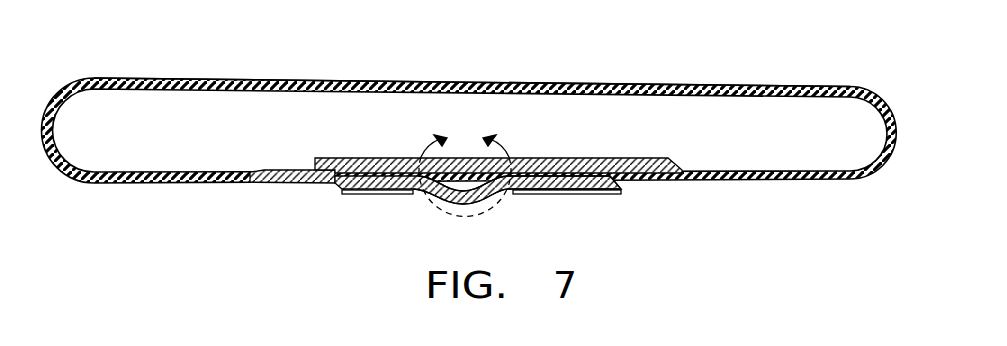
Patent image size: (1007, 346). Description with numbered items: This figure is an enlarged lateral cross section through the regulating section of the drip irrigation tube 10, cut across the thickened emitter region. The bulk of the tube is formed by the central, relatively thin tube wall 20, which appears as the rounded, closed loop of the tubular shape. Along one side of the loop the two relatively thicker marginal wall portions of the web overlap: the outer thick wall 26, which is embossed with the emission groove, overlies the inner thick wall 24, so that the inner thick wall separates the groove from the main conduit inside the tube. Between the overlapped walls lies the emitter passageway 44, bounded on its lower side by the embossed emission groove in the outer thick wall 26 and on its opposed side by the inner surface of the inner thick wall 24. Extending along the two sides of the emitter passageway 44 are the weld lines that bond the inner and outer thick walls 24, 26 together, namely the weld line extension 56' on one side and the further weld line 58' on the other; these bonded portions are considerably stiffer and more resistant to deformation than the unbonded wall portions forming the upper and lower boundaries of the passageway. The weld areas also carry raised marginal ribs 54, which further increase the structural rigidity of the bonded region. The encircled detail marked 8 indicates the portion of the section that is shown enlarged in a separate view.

The drip irrigation tube 10 is at (286, 79).
The tube wall 20 is at (634, 86).
The inner thick wall 24 is at (660, 176).
The outer thick wall 26 is at (296, 184).
The emitter passageway 44 is at (455, 178).
The raised marginal ribs 54 is at (334, 195).
The weld line extension 56' is at (564, 209).
The further weld line 58' is at (478, 214).
The section view indicator for FIG. 8 is at (465, 169).